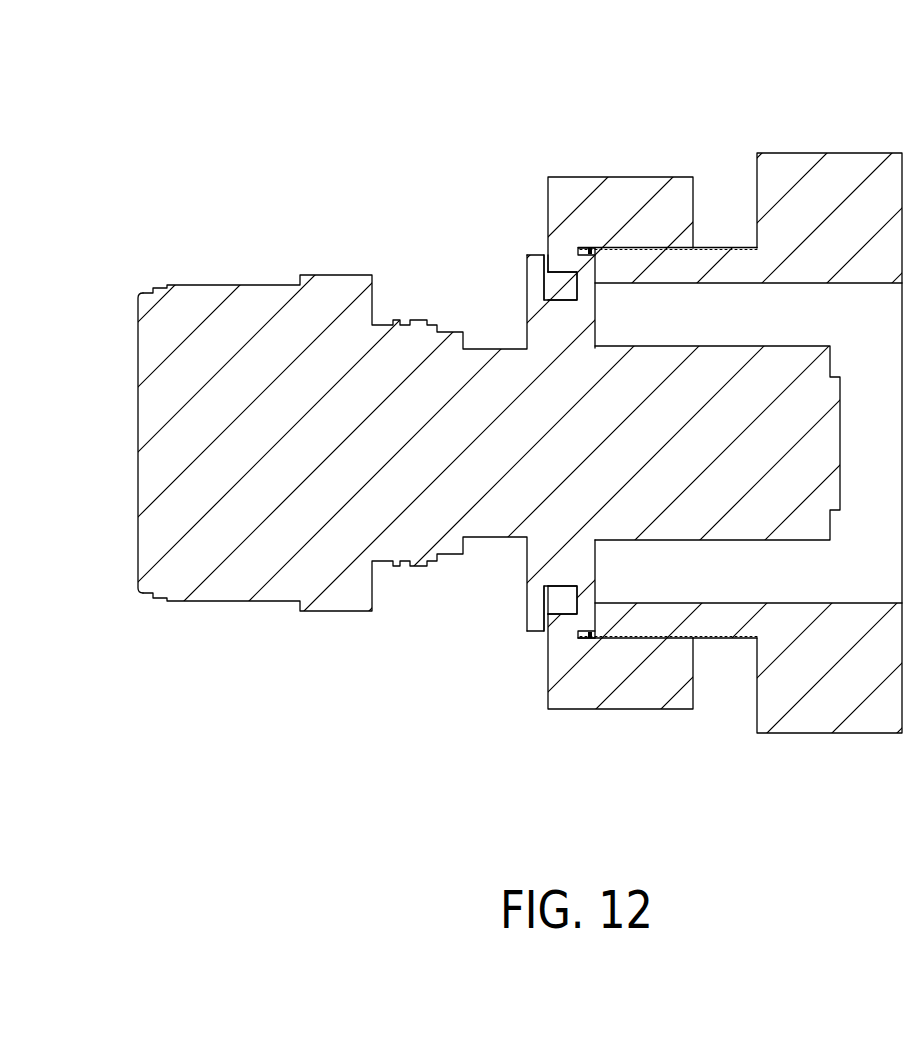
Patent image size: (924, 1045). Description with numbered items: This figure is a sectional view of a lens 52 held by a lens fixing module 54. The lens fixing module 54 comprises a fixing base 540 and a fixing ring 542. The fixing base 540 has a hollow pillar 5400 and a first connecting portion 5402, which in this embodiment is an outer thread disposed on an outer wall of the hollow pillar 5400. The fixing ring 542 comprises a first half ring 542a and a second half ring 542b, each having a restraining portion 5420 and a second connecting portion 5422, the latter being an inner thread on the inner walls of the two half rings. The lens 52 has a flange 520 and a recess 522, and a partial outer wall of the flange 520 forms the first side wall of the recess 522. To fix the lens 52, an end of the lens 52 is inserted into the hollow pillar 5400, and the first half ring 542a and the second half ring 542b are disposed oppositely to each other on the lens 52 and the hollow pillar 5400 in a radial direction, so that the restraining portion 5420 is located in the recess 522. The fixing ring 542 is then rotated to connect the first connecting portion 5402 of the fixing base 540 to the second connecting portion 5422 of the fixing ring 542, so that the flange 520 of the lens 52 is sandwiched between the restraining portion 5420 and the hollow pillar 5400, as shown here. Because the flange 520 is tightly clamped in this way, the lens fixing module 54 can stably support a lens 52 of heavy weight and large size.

The lens 52 is at (489, 474).
The flange 520 is at (567, 620).
The recess 522 is at (528, 610).
The restraining portion 5420 is at (562, 621).
The lens fixing module 54 is at (716, 403).
The fixing ring 542 is at (643, 435).
The first half ring 542a is at (570, 177).
The second half ring 542b is at (565, 709).
The second connecting portion 5422 is at (643, 641).
The fixing base 540 is at (748, 432).
The hollow pillar 5400 is at (723, 634).
The first connecting portion 5402 is at (660, 637).